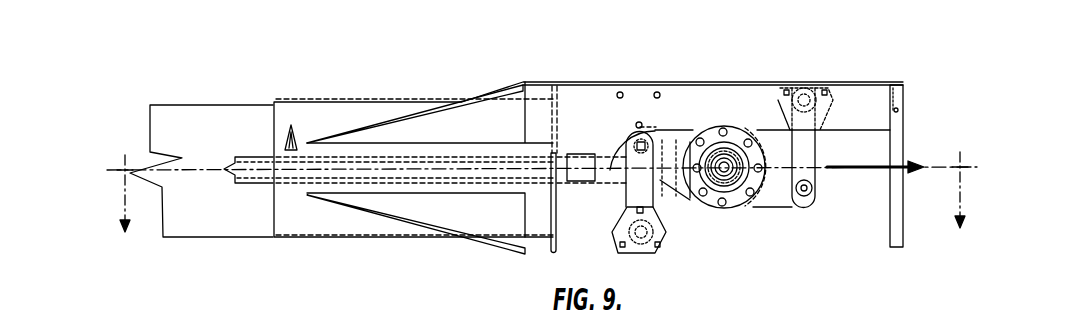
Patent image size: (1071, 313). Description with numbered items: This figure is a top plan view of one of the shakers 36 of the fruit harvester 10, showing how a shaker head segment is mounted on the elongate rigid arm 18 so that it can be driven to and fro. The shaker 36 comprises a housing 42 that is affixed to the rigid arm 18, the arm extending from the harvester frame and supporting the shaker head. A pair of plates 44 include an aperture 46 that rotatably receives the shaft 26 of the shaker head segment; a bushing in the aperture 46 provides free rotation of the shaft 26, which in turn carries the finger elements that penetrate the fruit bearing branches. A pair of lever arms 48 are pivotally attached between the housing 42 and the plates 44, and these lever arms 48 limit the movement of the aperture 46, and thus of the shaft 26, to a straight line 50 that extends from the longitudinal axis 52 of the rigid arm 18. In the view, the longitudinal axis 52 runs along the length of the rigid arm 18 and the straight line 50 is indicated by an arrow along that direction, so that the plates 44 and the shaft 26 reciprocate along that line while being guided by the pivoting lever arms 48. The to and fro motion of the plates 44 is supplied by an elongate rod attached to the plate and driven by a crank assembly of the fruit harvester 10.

The fruit harvester 10 is at (539, 192).
The elongate rigid arm 18 is at (198, 112).
The shaft 26 is at (732, 148).
The shaker 36 is at (714, 67).
The housing 42 is at (903, 90).
The plates 44 is at (758, 202).
The aperture 46 is at (725, 173).
The lever arms 48 is at (630, 190).
The straight line 50 is at (867, 172).
The longitudinal axis 52 is at (342, 168).